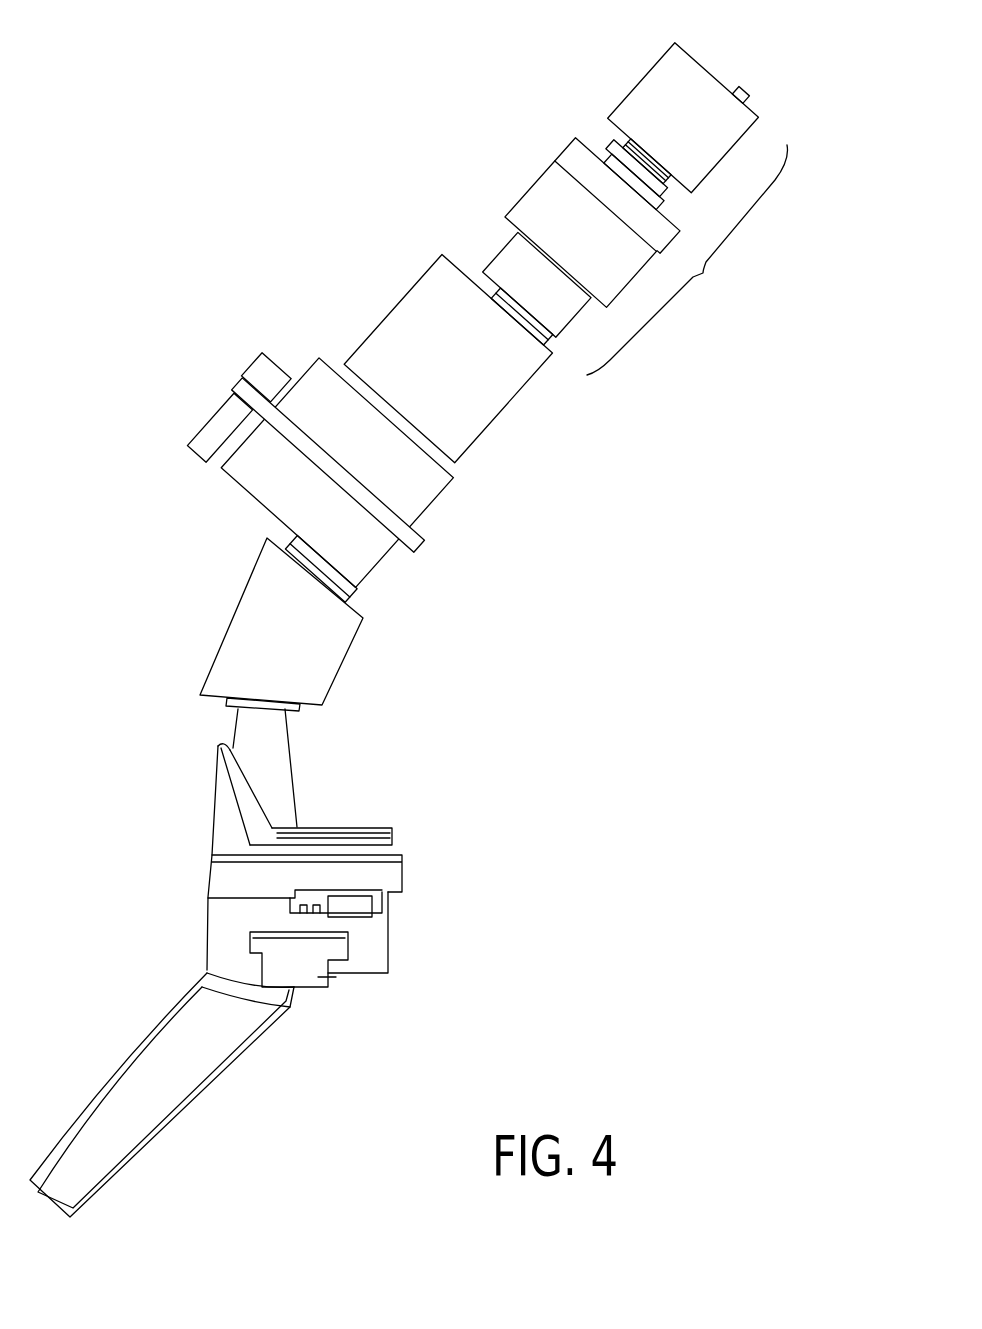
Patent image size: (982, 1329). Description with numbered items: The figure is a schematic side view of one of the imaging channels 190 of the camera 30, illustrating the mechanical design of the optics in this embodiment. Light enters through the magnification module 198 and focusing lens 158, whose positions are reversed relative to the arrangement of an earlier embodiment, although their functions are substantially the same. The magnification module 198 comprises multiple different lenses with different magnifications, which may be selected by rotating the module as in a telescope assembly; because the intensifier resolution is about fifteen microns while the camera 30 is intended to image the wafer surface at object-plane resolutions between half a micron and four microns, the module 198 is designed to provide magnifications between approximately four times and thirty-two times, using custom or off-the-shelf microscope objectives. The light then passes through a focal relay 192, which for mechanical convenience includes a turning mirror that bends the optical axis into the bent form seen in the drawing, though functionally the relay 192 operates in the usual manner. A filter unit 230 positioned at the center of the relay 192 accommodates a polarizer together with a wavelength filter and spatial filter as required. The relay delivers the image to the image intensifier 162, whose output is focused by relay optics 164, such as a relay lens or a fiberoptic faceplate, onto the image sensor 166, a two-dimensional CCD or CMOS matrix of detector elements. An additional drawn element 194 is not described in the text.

The camera 30 is at (687, 260).
The focusing lens 158 is at (400, 303).
The image intensifier 162 is at (493, 248).
The relay optics 164 is at (530, 183).
The image sensor 166 is at (642, 78).
The imaging channel 190 is at (262, 217).
The focal relay 192 is at (160, 1013).
The joint housing 194 is at (238, 600).
The magnification module 198 is at (430, 510).
The filter unit 230 is at (208, 898).